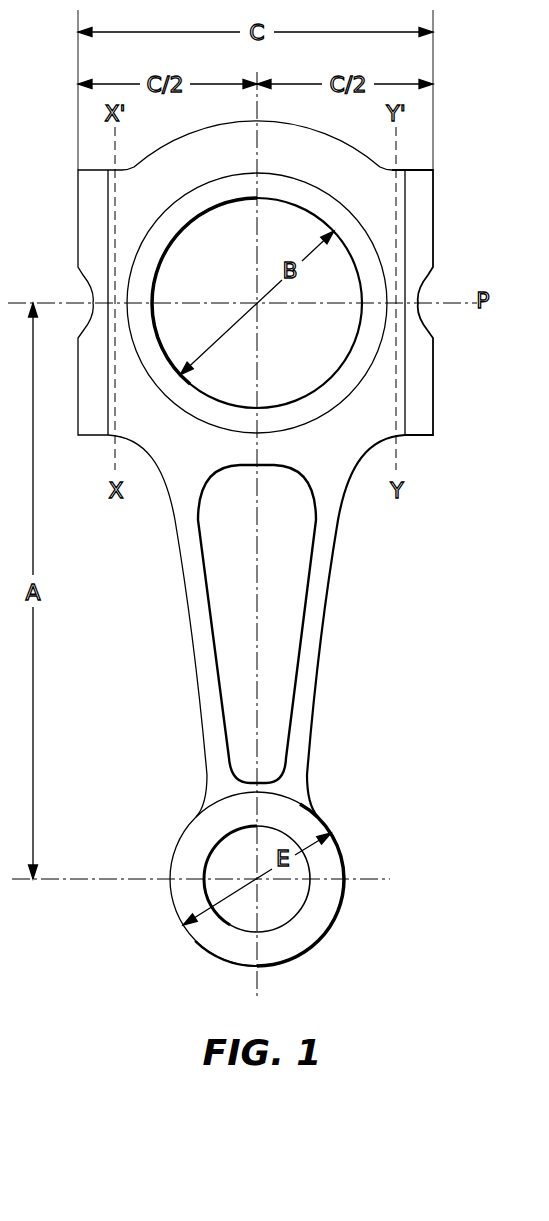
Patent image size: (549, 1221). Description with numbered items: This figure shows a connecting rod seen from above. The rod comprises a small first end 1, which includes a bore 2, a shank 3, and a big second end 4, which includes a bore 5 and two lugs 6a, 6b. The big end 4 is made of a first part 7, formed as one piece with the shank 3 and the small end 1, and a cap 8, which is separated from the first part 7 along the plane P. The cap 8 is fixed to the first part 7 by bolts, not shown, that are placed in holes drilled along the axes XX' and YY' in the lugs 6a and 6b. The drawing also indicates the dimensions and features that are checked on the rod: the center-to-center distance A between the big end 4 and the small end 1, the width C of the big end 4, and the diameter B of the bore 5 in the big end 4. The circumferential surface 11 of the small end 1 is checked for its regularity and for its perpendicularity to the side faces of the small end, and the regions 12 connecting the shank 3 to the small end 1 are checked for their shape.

The small first end 1 is at (345, 867).
The bore 2 is at (297, 900).
The shank 3 is at (327, 613).
The big second end 4 is at (442, 470).
The bore 5 is at (205, 273).
The lug 6a is at (433, 380).
The lug 6b is at (78, 412).
The first part 7 is at (383, 400).
The cap 8 is at (380, 200).
The circumferential surface 11 is at (198, 943).
The connecting regions 12 is at (200, 795).